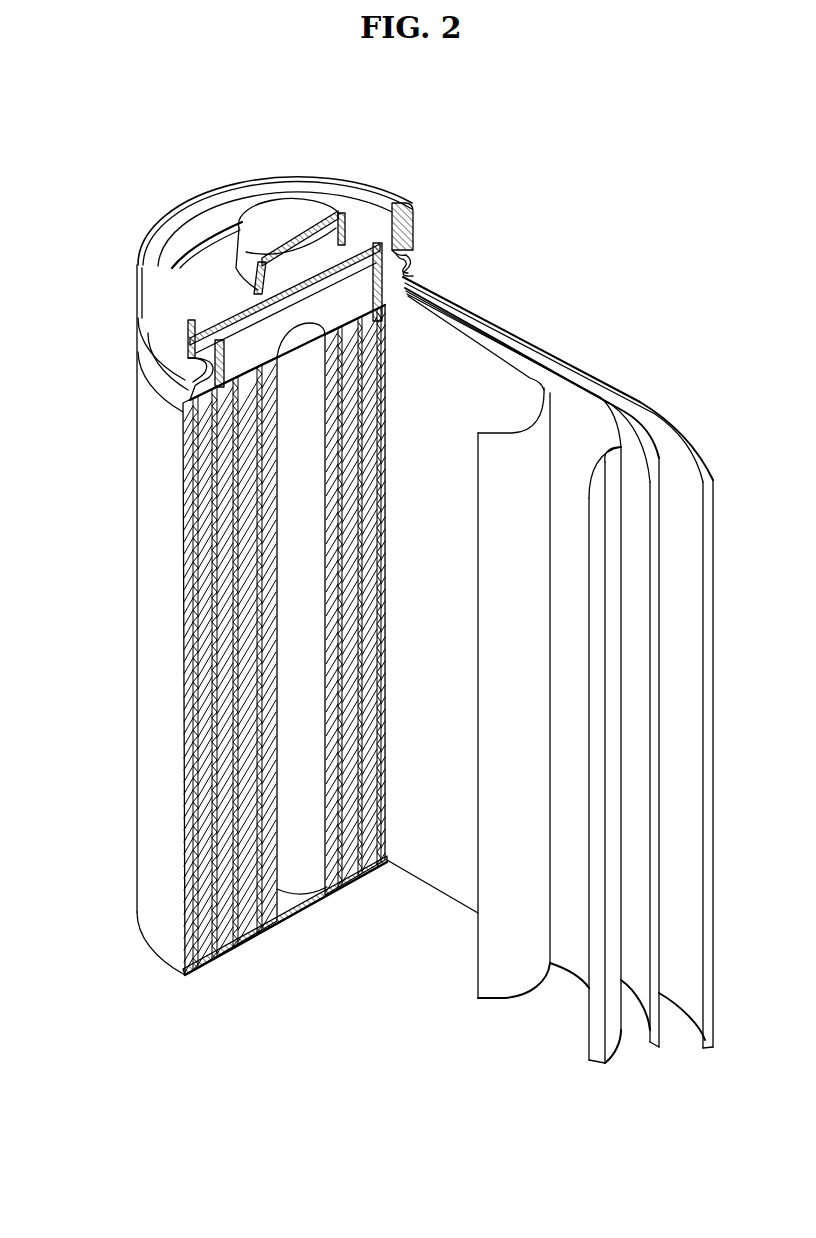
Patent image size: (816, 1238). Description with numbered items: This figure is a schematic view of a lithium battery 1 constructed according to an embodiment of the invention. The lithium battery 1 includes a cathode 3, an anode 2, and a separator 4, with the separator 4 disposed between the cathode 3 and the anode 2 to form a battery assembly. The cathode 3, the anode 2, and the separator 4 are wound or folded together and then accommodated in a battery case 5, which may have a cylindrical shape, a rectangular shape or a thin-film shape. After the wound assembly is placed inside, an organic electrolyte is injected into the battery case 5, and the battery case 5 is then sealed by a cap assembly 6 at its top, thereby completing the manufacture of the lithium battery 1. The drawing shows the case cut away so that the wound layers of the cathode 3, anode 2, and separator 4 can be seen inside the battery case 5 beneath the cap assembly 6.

The lithium battery 1 is at (574, 192).
The anode 2 is at (688, 448).
The cathode 3 is at (608, 445).
The separator 4 is at (515, 437).
The battery case 5 is at (145, 623).
The cap assembly 6 is at (268, 222).